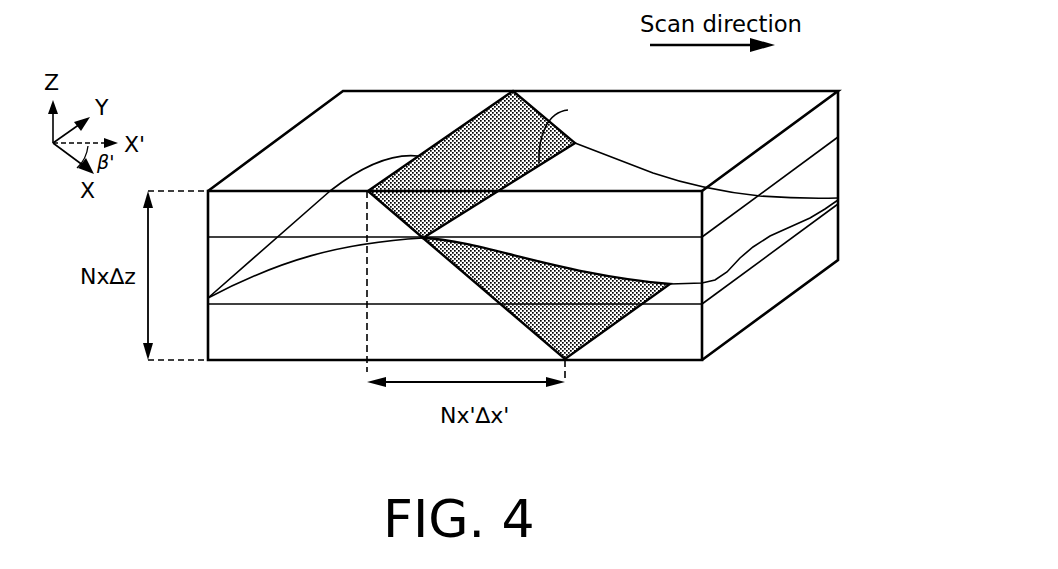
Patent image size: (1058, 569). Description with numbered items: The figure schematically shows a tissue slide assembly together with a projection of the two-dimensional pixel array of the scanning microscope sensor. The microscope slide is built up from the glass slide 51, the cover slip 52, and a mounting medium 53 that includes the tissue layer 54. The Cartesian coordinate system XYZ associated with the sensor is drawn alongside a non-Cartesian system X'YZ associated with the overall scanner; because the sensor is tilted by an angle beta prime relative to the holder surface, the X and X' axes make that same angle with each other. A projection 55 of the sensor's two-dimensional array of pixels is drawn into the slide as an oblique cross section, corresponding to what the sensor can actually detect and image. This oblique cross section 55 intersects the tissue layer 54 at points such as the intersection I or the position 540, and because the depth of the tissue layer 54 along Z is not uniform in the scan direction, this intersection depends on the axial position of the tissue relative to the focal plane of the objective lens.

The glass slide 51 is at (523, 279).
The cover slip 52 is at (523, 187).
The mounting medium 53 is at (595, 258).
The tissue layer 54 is at (377, 246).
The projection of the 2D array of pixels 55 is at (511, 108).
The position 540 is at (552, 154).
The intersection I is at (558, 129).